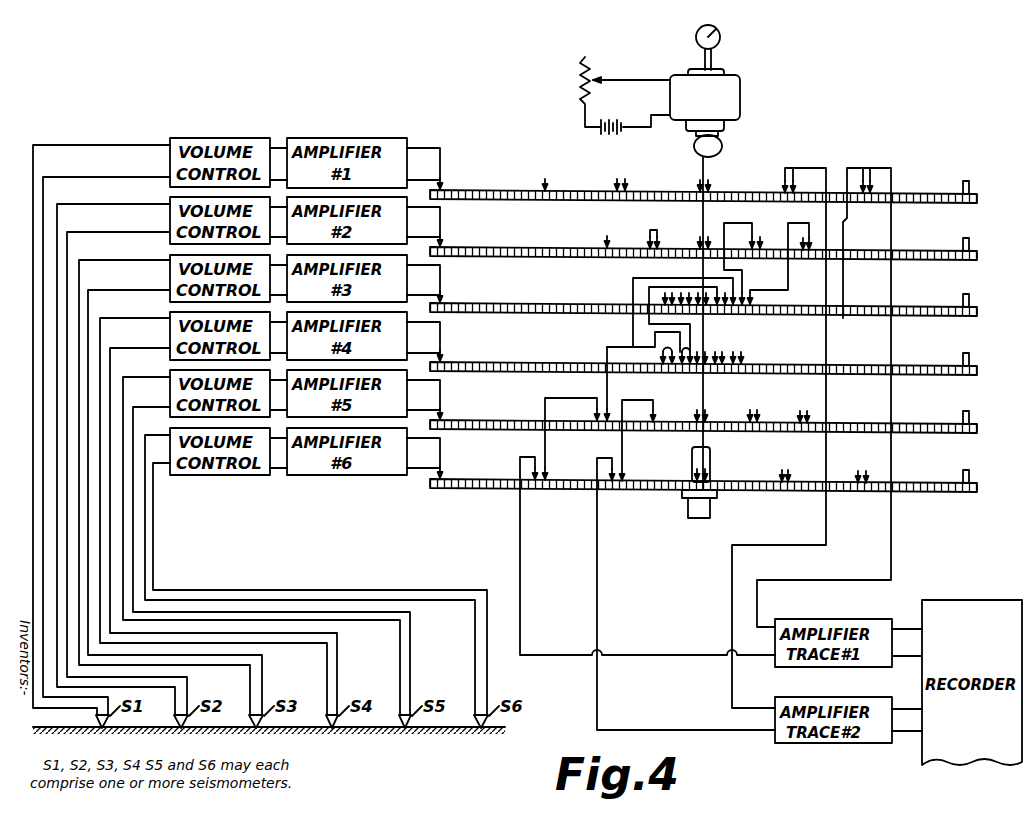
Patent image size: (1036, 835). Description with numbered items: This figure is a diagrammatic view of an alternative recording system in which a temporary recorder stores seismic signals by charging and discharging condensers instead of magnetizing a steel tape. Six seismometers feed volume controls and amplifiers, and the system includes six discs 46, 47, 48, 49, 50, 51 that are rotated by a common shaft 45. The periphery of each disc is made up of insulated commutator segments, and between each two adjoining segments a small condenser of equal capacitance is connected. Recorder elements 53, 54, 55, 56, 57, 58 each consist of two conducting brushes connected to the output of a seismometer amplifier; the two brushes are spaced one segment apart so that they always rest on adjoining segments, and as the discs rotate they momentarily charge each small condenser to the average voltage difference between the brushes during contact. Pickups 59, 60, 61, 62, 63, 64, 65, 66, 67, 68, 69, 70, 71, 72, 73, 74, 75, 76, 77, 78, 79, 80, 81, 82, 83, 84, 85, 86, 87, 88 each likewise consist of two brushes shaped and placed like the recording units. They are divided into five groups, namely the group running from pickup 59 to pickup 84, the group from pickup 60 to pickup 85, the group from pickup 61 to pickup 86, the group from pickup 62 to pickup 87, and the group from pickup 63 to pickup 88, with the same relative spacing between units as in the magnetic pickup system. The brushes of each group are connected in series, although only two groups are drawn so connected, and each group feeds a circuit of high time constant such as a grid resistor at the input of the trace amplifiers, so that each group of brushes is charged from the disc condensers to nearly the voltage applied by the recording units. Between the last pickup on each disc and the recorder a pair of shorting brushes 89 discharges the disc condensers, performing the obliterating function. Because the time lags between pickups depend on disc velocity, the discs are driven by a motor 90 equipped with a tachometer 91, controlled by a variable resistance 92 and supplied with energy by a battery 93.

The shaft 45 is at (712, 452).
The disc 46 is at (478, 190).
The disc 47 is at (491, 247).
The disc 48 is at (491, 303).
The disc 49 is at (491, 362).
The disc 50 is at (491, 420).
The disc 51 is at (476, 479).
The recorder element 53 is at (442, 186).
The recorder element 54 is at (442, 244).
The recorder element 55 is at (442, 300).
The recorder element 56 is at (442, 358).
The recorder element 57 is at (442, 416).
The recorder element 58 is at (442, 475).
The pickup 59 is at (547, 182).
The pickup 60 is at (620, 182).
The pickup 61 is at (709, 182).
The pickup 62 is at (786, 178).
The pickup 63 is at (865, 178).
The pickup 64 is at (607, 236).
The pickup 65 is at (651, 236).
The pickup 66 is at (700, 237).
The pickup 67 is at (752, 246).
The pickup 68 is at (812, 246).
The pickup 69 is at (665, 293).
The pickup 70 is at (681, 293).
The pickup 71 is at (698, 293).
The pickup 72 is at (725, 293).
The pickup 73 is at (742, 300).
The pickup 74 is at (741, 360).
The pickup 75 is at (733, 352).
The pickup 76 is at (722, 352).
The pickup 77 is at (697, 373).
The pickup 78 is at (663, 373).
The pickup 79 is at (802, 410).
The pickup 80 is at (757, 411).
The pickup 81 is at (706, 413).
The pickup 82 is at (653, 412).
The pickup 83 is at (597, 414).
The pickup 84 is at (860, 471).
The pickup 85 is at (788, 470).
The pickup 86 is at (697, 470).
The pickup 87 is at (613, 468).
The pickup 88 is at (545, 469).
The shorting brushes 89 is at (972, 481).
The motor 90 is at (741, 92).
The tachometer 91 is at (721, 37).
The variable resistance 92 is at (580, 78).
The battery 93 is at (610, 118).